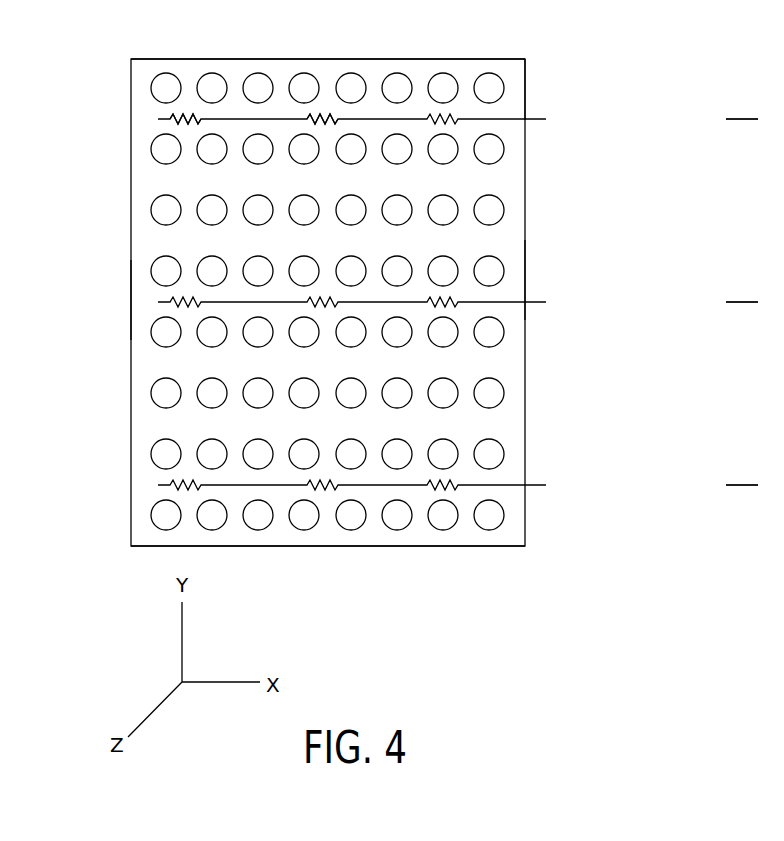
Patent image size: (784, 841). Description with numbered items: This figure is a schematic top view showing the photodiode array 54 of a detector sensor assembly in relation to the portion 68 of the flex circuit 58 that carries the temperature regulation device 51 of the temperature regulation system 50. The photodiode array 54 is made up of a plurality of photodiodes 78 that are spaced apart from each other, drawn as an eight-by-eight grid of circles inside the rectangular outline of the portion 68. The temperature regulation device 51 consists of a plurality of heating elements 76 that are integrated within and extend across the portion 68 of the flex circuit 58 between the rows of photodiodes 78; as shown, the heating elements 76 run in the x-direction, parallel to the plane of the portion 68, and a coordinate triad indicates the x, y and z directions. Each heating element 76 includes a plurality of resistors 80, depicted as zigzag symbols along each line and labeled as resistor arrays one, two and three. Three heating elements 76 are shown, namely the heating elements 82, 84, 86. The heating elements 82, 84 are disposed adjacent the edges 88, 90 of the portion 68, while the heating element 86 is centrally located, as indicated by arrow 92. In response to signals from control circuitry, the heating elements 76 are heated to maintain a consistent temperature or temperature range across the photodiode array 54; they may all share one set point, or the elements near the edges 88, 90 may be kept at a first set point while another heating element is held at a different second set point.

The temperature regulation system 50 is at (575, 283).
The temperature regulation device 51 is at (560, 262).
The photodiode array 54 is at (468, 76).
The flex circuit 58 is at (525, 95).
The portion of the flex circuit 68 is at (525, 68).
The heating elements 76 is at (756, 119).
The photodiodes 78 is at (304, 73).
The resistors 80 is at (190, 115).
The heating element 82 is at (732, 119).
The heating element 84 is at (756, 302).
The heating element 86 is at (756, 485).
The edge 88 is at (378, 59).
The edge 90 is at (425, 546).
The arrow 92 is at (150, 289).